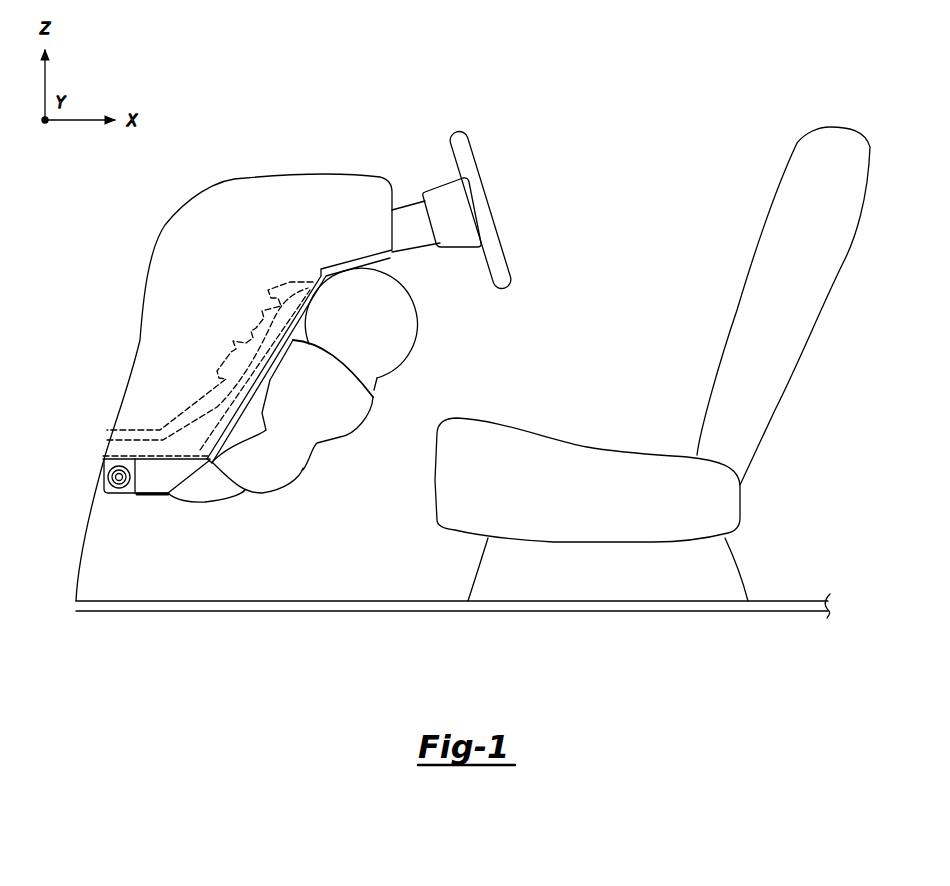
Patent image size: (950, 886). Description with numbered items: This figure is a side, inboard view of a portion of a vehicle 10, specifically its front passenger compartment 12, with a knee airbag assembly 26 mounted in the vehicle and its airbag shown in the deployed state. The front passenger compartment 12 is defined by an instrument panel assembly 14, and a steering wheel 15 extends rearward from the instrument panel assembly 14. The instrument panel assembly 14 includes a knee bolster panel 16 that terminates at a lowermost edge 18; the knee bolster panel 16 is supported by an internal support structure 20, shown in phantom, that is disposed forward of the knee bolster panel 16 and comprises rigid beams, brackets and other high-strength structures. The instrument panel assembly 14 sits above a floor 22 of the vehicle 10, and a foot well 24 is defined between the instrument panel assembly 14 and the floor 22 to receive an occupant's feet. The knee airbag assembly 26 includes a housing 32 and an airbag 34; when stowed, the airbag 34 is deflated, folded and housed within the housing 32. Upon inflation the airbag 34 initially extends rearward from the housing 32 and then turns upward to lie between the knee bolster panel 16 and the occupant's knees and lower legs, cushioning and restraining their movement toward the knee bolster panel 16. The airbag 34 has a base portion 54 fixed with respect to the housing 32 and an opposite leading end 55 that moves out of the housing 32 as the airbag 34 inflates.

The vehicle 10 is at (259, 152).
The front passenger compartment 12 is at (628, 236).
The instrument panel assembly 14 is at (390, 191).
The steering wheel 15 is at (440, 193).
The knee bolster panel 16 is at (375, 396).
The lowermost edge 18 is at (243, 490).
The internal support structure 20 is at (138, 427).
The floor 22 is at (343, 600).
The foot well 24 is at (155, 559).
The knee airbag assembly 26 is at (137, 502).
The housing 32 is at (153, 503).
The airbag 34 is at (303, 470).
The base portion 54 is at (169, 495).
The leading end 55 is at (415, 342).